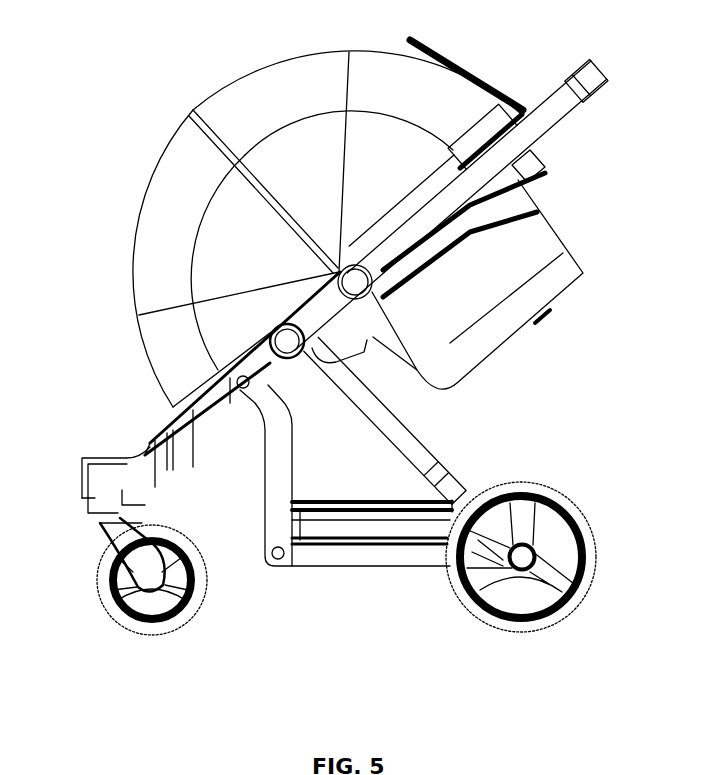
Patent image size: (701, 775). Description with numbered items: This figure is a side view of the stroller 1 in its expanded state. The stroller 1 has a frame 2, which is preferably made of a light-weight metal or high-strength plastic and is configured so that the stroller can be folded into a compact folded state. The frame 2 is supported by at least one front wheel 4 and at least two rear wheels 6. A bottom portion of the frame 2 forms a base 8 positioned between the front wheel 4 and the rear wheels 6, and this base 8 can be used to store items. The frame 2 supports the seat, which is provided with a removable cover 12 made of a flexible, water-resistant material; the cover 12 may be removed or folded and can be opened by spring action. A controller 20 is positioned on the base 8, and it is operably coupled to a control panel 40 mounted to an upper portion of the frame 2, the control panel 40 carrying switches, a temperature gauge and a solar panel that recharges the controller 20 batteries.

The stroller 1 is at (104, 137).
The frame 2 is at (420, 447).
The front wheel 4 is at (95, 575).
The rear wheels 6 is at (600, 543).
The base 8 is at (316, 548).
The removable cover 12 is at (394, 99).
The controller 20 is at (386, 529).
The control panel 40 is at (436, 50).